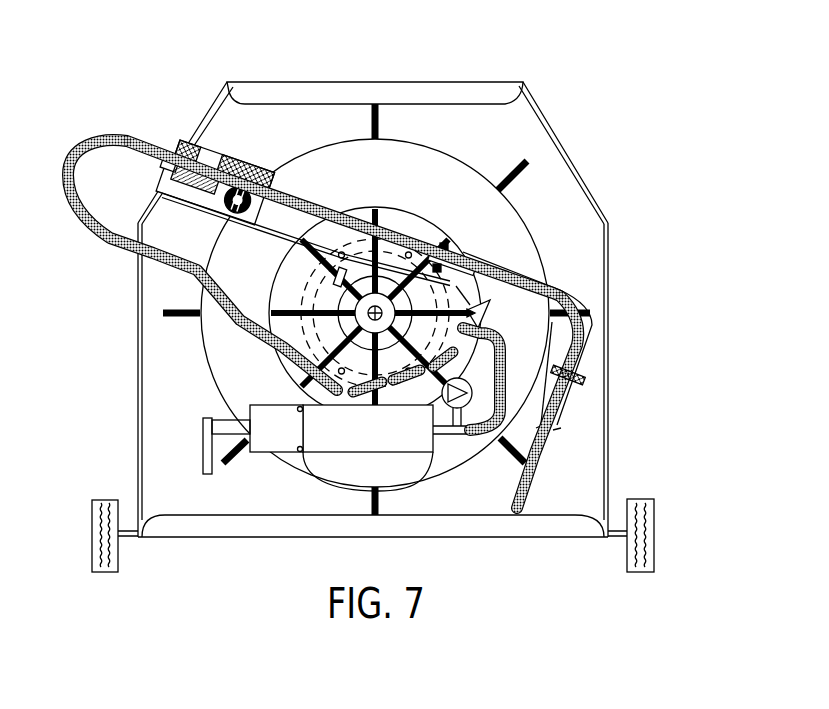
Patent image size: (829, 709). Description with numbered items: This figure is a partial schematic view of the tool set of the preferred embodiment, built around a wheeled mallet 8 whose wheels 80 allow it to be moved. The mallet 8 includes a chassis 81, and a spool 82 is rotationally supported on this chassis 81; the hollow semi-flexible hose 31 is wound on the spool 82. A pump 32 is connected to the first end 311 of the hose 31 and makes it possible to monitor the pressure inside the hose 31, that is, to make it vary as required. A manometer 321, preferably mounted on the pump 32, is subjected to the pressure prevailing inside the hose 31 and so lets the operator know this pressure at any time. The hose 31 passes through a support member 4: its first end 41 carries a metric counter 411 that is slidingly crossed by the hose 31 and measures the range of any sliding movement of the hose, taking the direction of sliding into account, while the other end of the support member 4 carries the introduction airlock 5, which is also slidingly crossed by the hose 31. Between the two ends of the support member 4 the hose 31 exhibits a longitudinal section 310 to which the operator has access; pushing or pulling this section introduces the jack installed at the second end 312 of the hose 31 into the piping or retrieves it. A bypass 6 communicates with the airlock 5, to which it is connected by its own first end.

The mallet 8 is at (193, 87).
The wheels 80 is at (100, 500).
The chassis 81 is at (535, 132).
The spool 82 is at (510, 232).
The support member 4 is at (268, 247).
The first end of the support member 41 is at (206, 210).
The metric counter 411 is at (248, 158).
The hollow semi-flexible hose 31 is at (168, 262).
The longitudinal section of the hose 310 is at (330, 200).
The first end of the hose 311 is at (535, 422).
The second end of the hose 312 is at (528, 497).
The pump 32 is at (287, 455).
The manometer 321 is at (477, 418).
The introduction airlock 5 is at (588, 280).
The bypass 6 is at (490, 322).